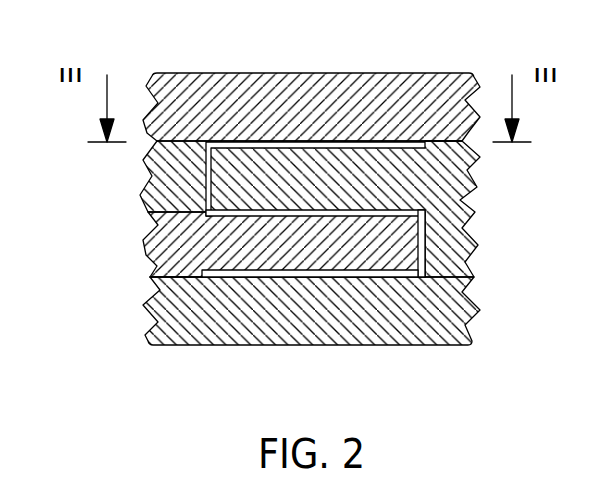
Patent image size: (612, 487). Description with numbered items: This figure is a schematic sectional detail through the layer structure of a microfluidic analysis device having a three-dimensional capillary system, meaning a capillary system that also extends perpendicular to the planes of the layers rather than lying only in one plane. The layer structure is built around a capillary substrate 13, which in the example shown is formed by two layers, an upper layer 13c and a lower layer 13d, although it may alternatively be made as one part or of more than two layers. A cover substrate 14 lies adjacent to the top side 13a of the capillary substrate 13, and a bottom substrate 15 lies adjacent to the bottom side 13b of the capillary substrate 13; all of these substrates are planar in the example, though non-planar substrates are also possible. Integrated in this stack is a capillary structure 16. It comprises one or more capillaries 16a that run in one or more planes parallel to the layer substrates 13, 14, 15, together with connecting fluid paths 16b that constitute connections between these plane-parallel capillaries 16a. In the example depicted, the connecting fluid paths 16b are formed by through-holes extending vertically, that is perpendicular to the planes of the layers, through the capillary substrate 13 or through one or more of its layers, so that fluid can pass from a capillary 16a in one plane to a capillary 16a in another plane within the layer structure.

The capillary substrate 13 is at (447, 222).
The top side of the capillary substrate 13a is at (470, 143).
The bottom side of the capillary substrate 13b is at (150, 268).
The upper layer 13c is at (150, 157).
The lower layer 13d is at (150, 233).
The cover substrate 14 is at (448, 88).
The bottom substrate 15 is at (199, 323).
The capillary structure 16 is at (407, 255).
The capillaries 16a is at (310, 277).
The connecting fluid paths 16b is at (210, 142).